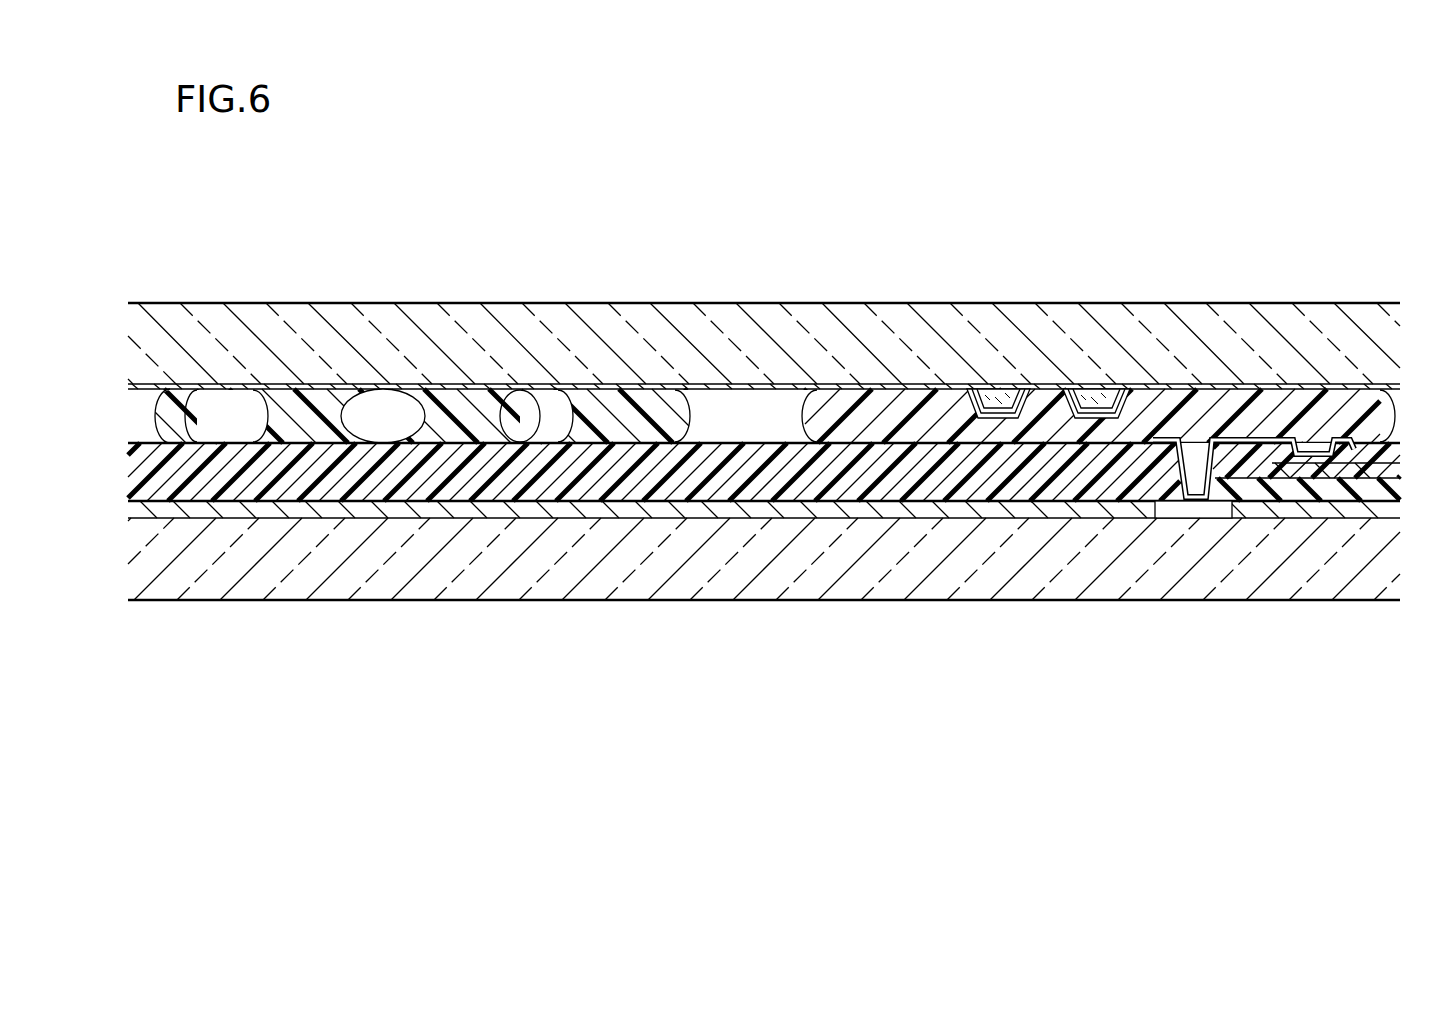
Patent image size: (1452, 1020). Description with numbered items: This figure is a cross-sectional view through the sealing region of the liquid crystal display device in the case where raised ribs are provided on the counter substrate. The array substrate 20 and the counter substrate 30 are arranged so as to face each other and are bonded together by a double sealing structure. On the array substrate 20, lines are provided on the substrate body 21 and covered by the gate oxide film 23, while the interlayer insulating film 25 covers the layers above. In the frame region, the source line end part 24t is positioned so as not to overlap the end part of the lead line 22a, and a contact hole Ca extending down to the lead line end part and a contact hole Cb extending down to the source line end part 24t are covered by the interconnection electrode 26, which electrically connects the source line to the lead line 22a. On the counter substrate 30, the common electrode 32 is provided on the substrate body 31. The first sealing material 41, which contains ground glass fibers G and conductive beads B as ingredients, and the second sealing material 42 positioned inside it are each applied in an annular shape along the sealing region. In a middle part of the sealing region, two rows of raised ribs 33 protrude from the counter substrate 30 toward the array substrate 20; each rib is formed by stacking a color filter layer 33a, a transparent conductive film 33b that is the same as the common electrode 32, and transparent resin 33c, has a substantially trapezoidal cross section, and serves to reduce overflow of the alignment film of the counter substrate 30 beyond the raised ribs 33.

The array substrate 20 is at (788, 474).
The substrate body 21 is at (292, 585).
The lead line 22a is at (235, 508).
The gate oxide film 23 is at (1270, 505).
The source line end part 24t is at (1296, 490).
The interlayer insulating film 25 is at (157, 483).
The interconnection electrode 26 is at (1160, 503).
The counter substrate 30 is at (790, 318).
The substrate body 31 is at (1110, 318).
The common electrode 32 is at (1268, 386).
The raised ribs 33 is at (1011, 302).
The color filter layer 33a is at (990, 388).
The transparent conductive film 33b is at (997, 388).
The transparent resin 33c is at (1048, 320).
The first sealing material 41 is at (170, 433).
The second sealing material 42 is at (789, 433).
The ground glass fibers G is at (235, 408).
The conductive beads B is at (390, 408).
The contact hole Ca is at (1186, 463).
The contact hole Cb is at (1298, 440).